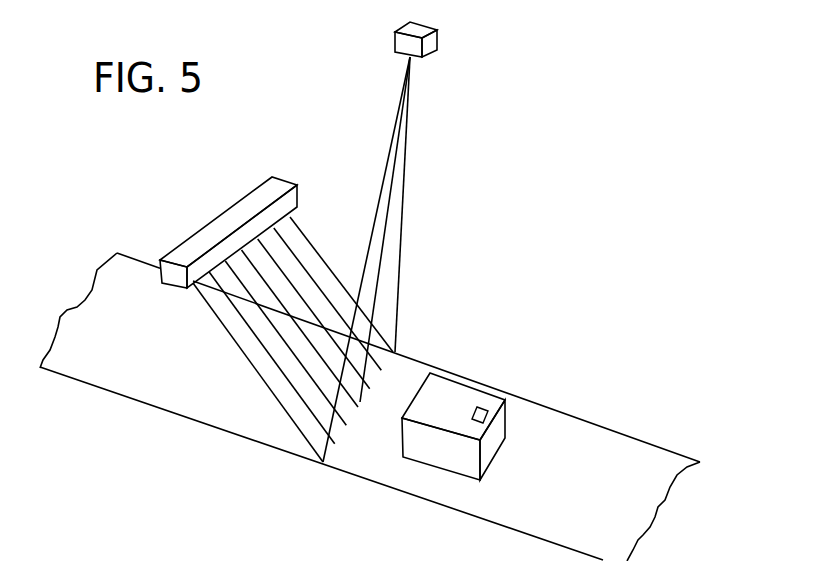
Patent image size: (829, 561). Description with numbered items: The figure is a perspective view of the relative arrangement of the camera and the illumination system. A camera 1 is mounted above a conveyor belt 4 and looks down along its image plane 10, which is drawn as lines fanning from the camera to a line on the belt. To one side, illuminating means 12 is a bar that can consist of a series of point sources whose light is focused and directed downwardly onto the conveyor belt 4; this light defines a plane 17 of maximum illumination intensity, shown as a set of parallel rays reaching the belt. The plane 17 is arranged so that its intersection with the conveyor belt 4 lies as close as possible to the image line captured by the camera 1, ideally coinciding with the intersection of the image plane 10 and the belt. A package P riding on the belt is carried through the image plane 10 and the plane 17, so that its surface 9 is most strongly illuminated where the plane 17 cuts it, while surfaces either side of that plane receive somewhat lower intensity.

The camera 1 is at (435, 43).
The conveyor belt 4 is at (137, 320).
The surface 9 is at (447, 402).
The image plane 10 is at (405, 213).
The illuminating means 12 is at (198, 243).
The plane 17 is at (262, 258).
The package P is at (495, 430).